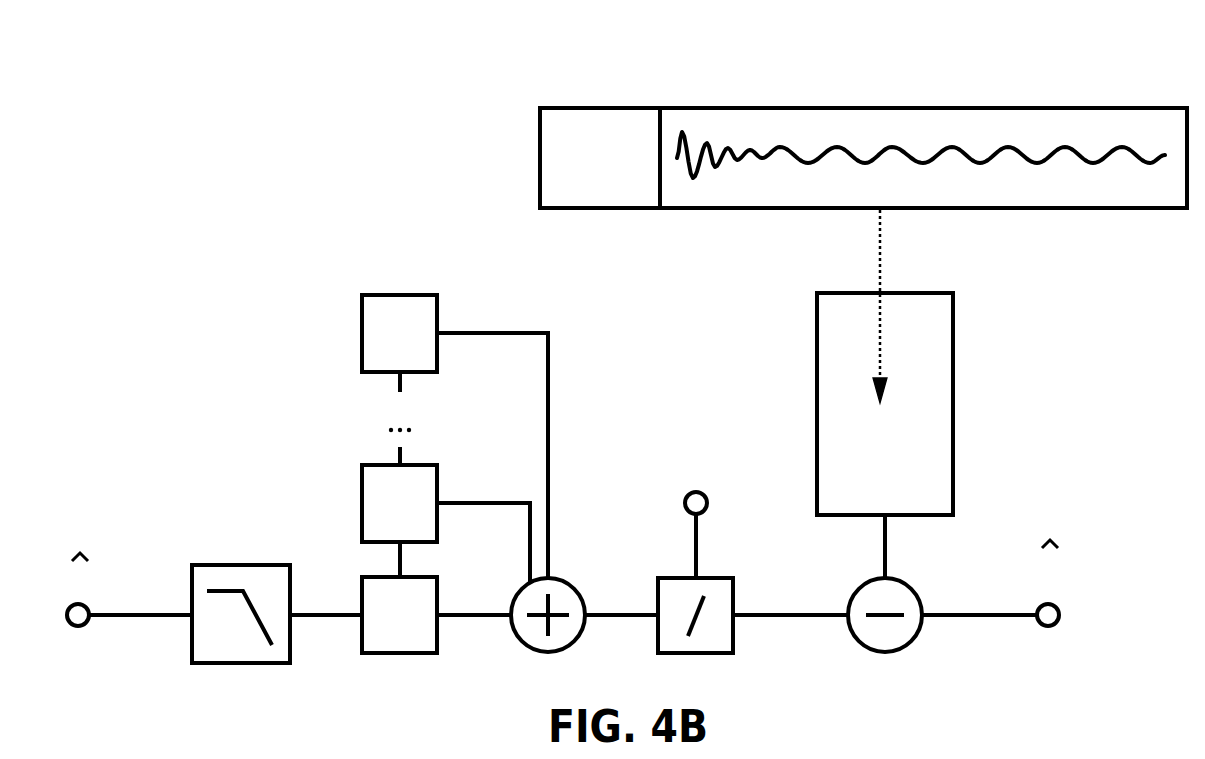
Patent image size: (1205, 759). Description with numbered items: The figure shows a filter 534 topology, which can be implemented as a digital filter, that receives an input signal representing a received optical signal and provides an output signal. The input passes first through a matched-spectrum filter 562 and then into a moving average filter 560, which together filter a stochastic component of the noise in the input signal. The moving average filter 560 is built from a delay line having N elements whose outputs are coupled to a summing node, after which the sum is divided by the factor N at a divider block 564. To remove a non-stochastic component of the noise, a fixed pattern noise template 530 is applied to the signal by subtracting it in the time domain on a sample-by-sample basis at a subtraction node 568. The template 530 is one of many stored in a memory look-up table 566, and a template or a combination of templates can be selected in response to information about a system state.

The fixed pattern noise template 530 is at (780, 106).
The filter 534 is at (984, 41).
The moving average filter 560 is at (710, 287).
The matched-spectrum filter 562 is at (245, 560).
The divider / normalization block 564 is at (693, 570).
The look-up table 566 is at (817, 403).
The subtractor 568 is at (858, 585).